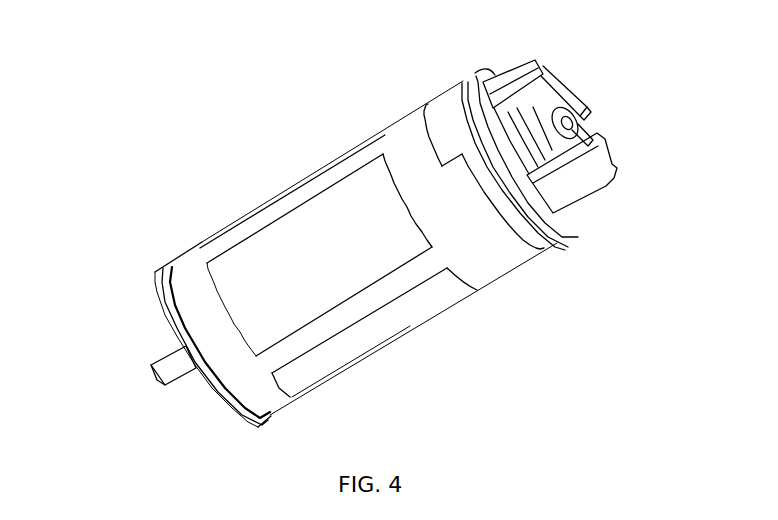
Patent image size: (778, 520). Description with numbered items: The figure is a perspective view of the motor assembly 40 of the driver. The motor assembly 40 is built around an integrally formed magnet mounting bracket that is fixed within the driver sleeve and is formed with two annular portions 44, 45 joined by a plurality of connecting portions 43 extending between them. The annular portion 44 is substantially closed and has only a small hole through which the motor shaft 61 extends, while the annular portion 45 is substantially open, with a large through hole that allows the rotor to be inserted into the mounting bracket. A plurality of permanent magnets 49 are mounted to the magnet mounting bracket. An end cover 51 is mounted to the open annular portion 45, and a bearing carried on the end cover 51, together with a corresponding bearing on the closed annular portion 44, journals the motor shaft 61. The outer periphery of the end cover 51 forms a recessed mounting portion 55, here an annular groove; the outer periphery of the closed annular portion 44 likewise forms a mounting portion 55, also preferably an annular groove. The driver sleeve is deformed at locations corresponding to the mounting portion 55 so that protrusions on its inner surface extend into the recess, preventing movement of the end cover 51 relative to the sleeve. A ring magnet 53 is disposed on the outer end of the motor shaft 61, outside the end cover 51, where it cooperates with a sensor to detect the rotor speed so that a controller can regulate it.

The motor assembly 40 is at (398, 78).
The connecting portions 43 is at (386, 253).
The annular portion 44 is at (193, 262).
The annular portion 45 is at (482, 280).
The permanent magnets 49 is at (422, 305).
The end cover 51 is at (537, 240).
The ring magnet 53 is at (590, 128).
The mounting portion 55 is at (183, 305).
The motor shaft 61 is at (152, 366).